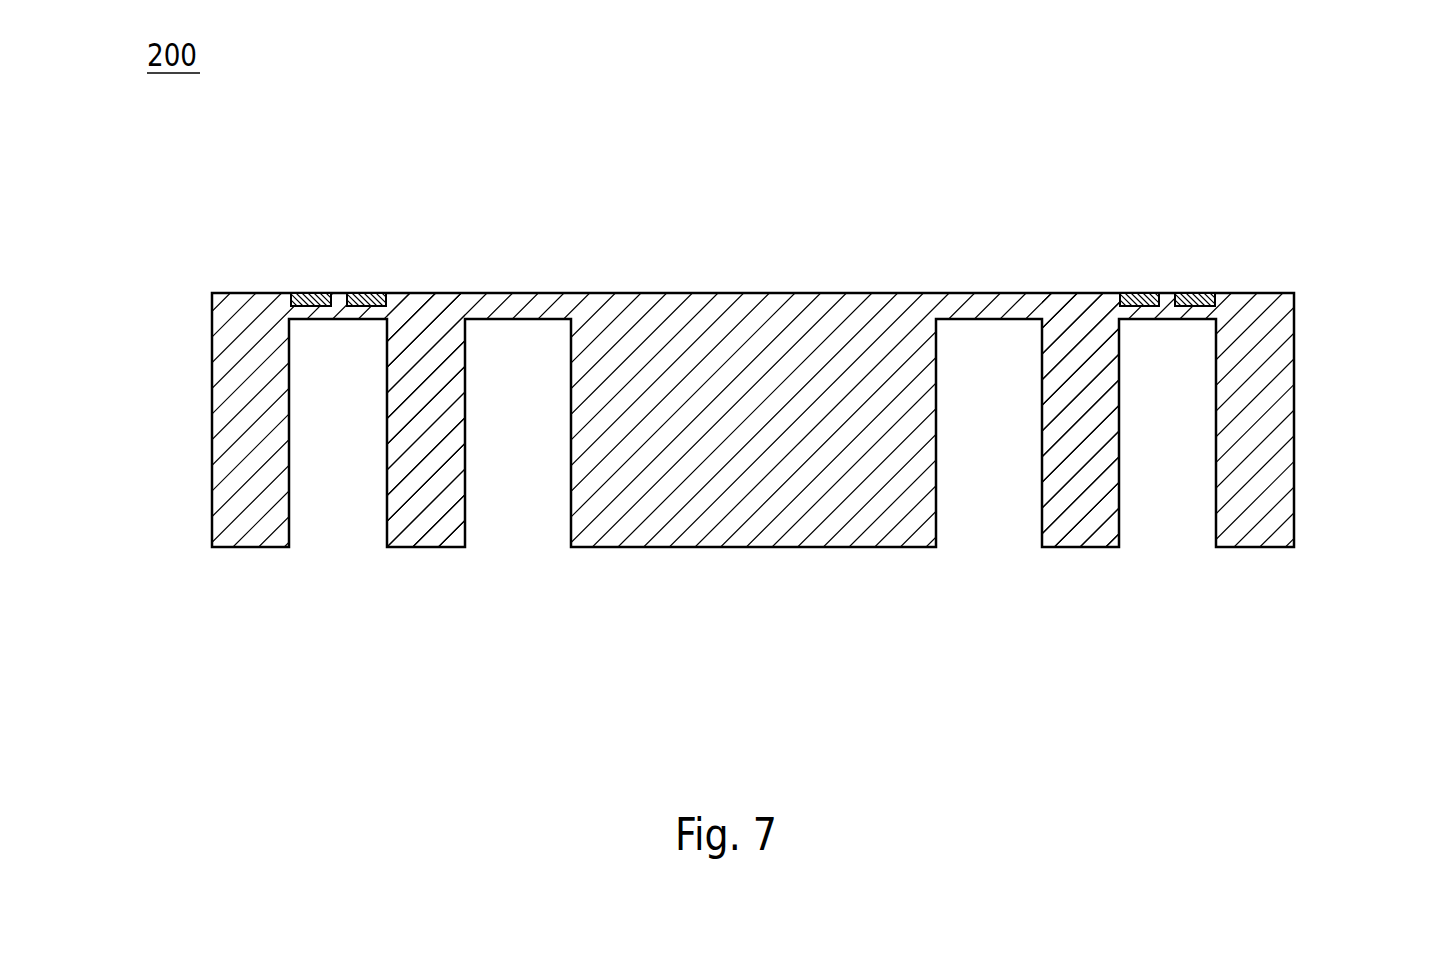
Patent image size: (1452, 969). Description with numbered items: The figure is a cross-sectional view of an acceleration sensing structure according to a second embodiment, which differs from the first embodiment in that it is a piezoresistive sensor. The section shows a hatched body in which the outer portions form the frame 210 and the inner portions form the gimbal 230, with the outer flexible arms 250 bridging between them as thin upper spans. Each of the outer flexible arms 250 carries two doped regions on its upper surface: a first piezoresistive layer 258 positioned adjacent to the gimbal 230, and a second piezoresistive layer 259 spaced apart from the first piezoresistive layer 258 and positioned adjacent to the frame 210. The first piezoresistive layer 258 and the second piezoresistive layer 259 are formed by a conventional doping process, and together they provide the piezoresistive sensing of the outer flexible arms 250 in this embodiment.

The frame 210 is at (247, 355).
The gimbal 230 is at (405, 518).
The outer flexible arm 250 is at (752, 233).
The first piezoresistive layer 258 is at (371, 293).
The second piezoresistive layer 259 is at (307, 293).